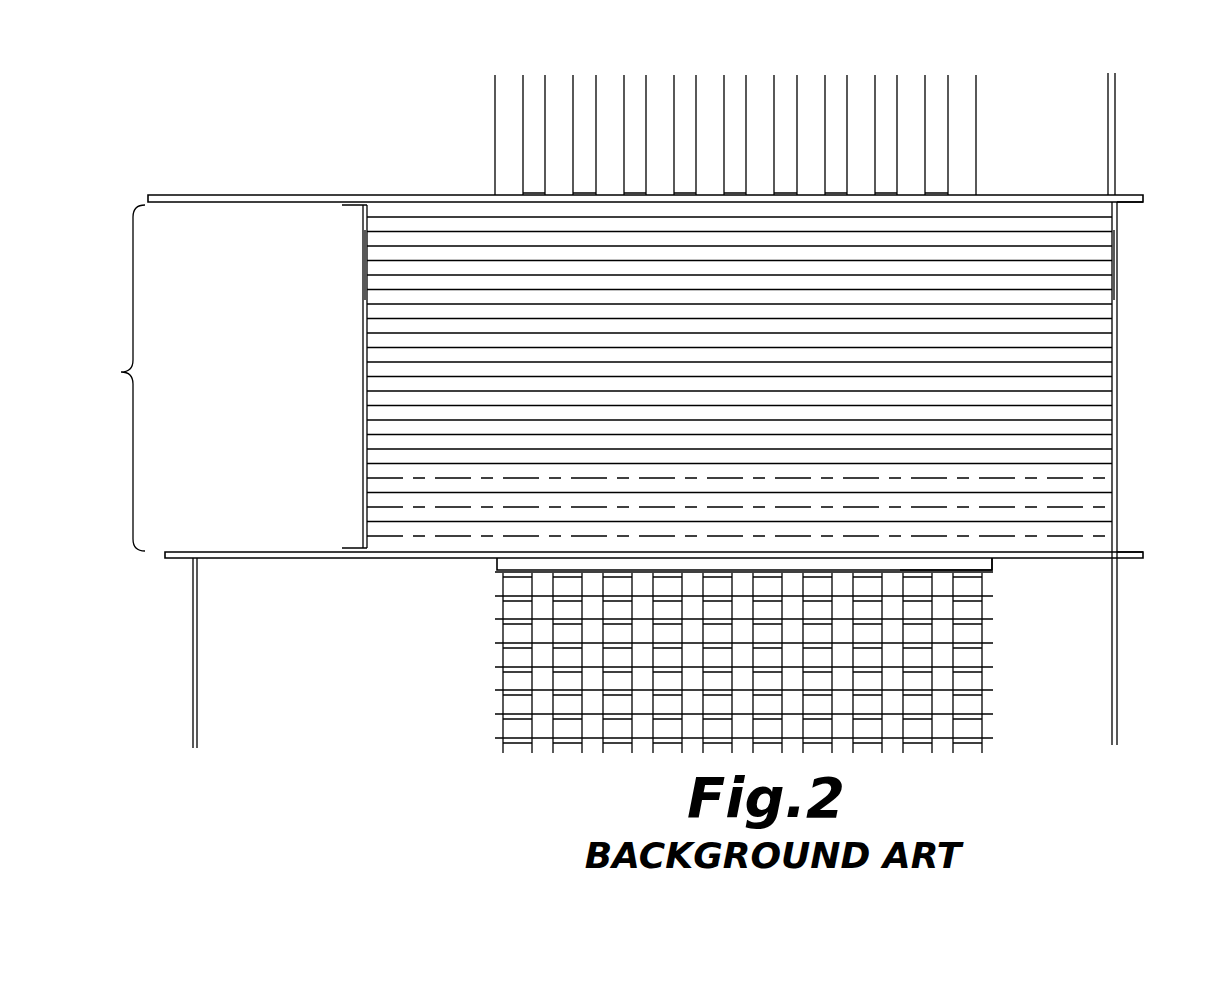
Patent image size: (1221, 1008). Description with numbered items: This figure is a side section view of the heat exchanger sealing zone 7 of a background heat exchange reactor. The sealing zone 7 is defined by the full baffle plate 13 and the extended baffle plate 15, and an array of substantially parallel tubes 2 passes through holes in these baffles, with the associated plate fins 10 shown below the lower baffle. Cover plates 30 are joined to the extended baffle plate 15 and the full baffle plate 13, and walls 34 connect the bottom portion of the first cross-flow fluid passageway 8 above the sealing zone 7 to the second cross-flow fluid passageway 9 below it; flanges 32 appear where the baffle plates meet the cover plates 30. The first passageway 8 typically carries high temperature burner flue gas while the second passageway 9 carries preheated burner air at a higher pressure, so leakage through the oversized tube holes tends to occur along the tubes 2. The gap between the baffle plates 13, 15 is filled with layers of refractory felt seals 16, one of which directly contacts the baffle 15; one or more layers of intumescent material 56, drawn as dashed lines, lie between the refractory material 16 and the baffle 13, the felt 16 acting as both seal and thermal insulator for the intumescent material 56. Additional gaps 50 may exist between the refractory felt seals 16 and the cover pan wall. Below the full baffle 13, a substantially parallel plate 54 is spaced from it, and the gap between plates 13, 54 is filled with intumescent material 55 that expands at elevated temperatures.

The tube array 2 is at (508, 74).
The heat exchanger sealing zone 7 is at (128, 378).
The first cross-flow fluid passageway 8 is at (337, 110).
The second cross-flow fluid passageway 9 is at (316, 672).
The plate fins 10 is at (997, 747).
The full baffle plate 13 is at (270, 547).
The extended baffle plate 15 is at (243, 195).
The refractory felt seals 16 is at (471, 203).
The cover plates 30 is at (1124, 104).
The flange 32 is at (345, 207).
The walls 34 is at (362, 258).
The gaps 50 is at (1102, 491).
The plate 54 is at (498, 575).
The intumescent material 55 is at (978, 558).
The intumescent material layers 56 is at (456, 465).